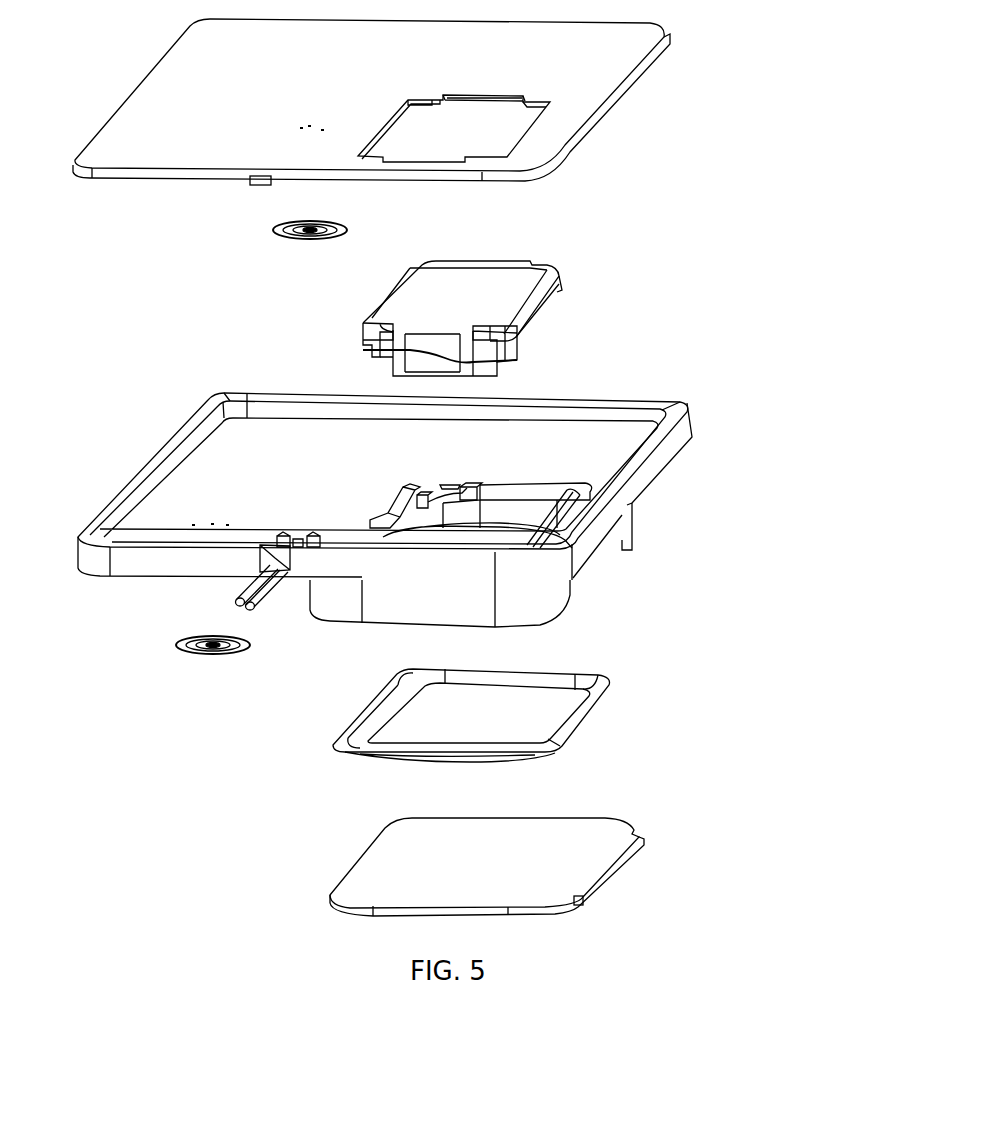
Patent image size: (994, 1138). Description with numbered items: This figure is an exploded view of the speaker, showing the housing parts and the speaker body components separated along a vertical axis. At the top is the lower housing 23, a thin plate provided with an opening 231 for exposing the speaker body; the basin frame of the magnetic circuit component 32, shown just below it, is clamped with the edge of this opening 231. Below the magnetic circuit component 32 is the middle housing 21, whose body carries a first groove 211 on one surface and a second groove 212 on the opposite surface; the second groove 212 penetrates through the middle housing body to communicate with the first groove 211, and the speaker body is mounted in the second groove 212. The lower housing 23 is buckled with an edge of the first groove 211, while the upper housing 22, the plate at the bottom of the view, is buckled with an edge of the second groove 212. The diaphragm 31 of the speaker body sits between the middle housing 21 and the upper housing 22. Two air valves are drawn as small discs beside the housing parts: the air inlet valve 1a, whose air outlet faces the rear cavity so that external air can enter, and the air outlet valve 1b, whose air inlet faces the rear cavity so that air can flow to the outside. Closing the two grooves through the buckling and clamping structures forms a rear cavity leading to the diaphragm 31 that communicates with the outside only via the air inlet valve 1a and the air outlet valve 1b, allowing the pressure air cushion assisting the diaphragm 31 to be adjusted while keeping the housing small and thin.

The lower housing 23 is at (600, 67).
The opening 231 is at (493, 128).
The air inlet valve 1a is at (287, 130).
The magnetic circuit component 32 is at (537, 317).
The middle housing 21 is at (648, 465).
The first groove 211 is at (217, 463).
The second groove 212 is at (512, 522).
The air outlet valve 1b is at (207, 530).
The diaphragm 31 is at (585, 694).
The upper housing 22 is at (560, 860).